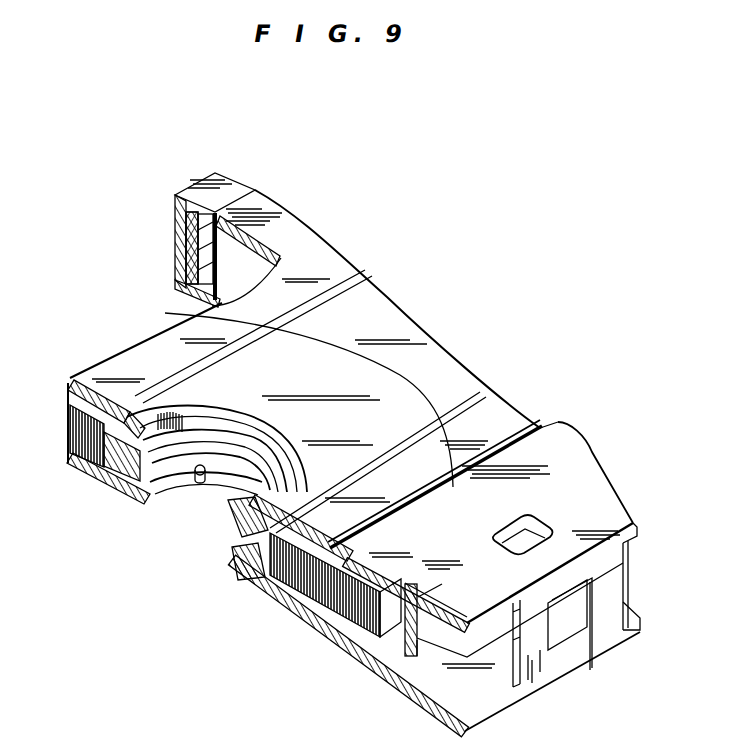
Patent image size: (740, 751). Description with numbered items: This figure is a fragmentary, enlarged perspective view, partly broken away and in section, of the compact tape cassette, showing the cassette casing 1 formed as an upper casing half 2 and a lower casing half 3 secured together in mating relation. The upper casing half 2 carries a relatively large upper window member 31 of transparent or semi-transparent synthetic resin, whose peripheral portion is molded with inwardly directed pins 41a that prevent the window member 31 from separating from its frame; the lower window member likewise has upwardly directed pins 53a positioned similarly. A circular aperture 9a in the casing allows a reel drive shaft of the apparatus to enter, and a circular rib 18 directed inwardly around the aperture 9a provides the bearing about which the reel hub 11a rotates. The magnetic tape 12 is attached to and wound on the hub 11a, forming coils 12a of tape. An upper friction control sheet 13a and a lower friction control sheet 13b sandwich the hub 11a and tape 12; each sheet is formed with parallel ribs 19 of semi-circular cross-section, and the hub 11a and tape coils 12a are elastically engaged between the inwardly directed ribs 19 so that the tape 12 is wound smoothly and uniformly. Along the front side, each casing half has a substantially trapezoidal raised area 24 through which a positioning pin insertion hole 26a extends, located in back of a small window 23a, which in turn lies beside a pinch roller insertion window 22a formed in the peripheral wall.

The cassette casing 1 is at (331, 205).
The upper casing half 2 is at (231, 181).
The lower casing half 3 is at (170, 276).
The circular aperture 9a is at (217, 443).
The reel hub 11a is at (173, 474).
The magnetic tape 12 is at (66, 414).
The coils of magnetic tape 12a is at (390, 393).
The upper friction control sheet 13a is at (494, 399).
The lower friction control sheet 13b is at (242, 566).
The circular ribs 18 is at (127, 499).
The ribs 19 is at (102, 403).
The pinch roller insertion window 22a is at (492, 694).
The small window 23a is at (567, 641).
The raised area 24 is at (590, 468).
The positioning pin insertion hole 26a is at (536, 527).
The upper window member 31 is at (388, 310).
The pins 41a is at (188, 219).
The pins 53a is at (198, 260).